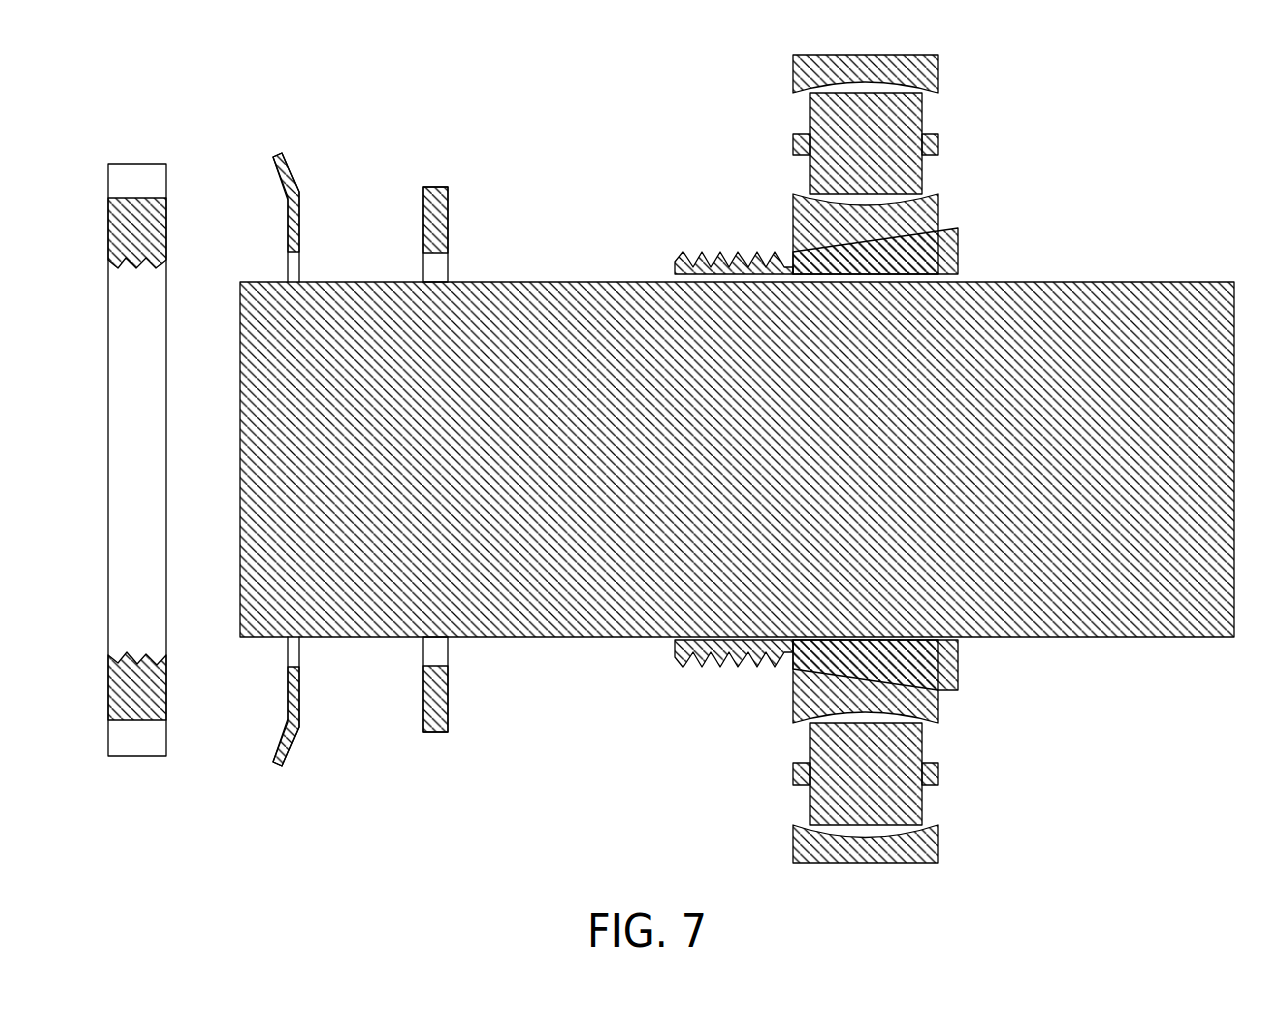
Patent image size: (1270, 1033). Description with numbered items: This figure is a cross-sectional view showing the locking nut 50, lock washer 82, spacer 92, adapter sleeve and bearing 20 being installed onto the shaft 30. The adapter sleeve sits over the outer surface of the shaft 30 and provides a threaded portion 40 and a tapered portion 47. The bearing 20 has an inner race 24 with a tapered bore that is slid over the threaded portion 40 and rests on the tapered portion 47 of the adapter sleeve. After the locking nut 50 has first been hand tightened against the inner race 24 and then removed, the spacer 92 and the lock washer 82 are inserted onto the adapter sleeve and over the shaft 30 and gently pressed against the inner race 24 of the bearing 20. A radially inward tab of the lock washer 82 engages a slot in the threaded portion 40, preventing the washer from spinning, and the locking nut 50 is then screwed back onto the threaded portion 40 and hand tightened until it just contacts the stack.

The bearing 20 is at (940, 72).
The bearing inner race 24 is at (931, 193).
The shaft 30 is at (1122, 282).
The threaded portion 40 is at (682, 253).
The tapered portion 47 is at (948, 228).
The locking nut 50 is at (137, 164).
The lock washer 82 is at (277, 153).
The spacer 92 is at (436, 187).